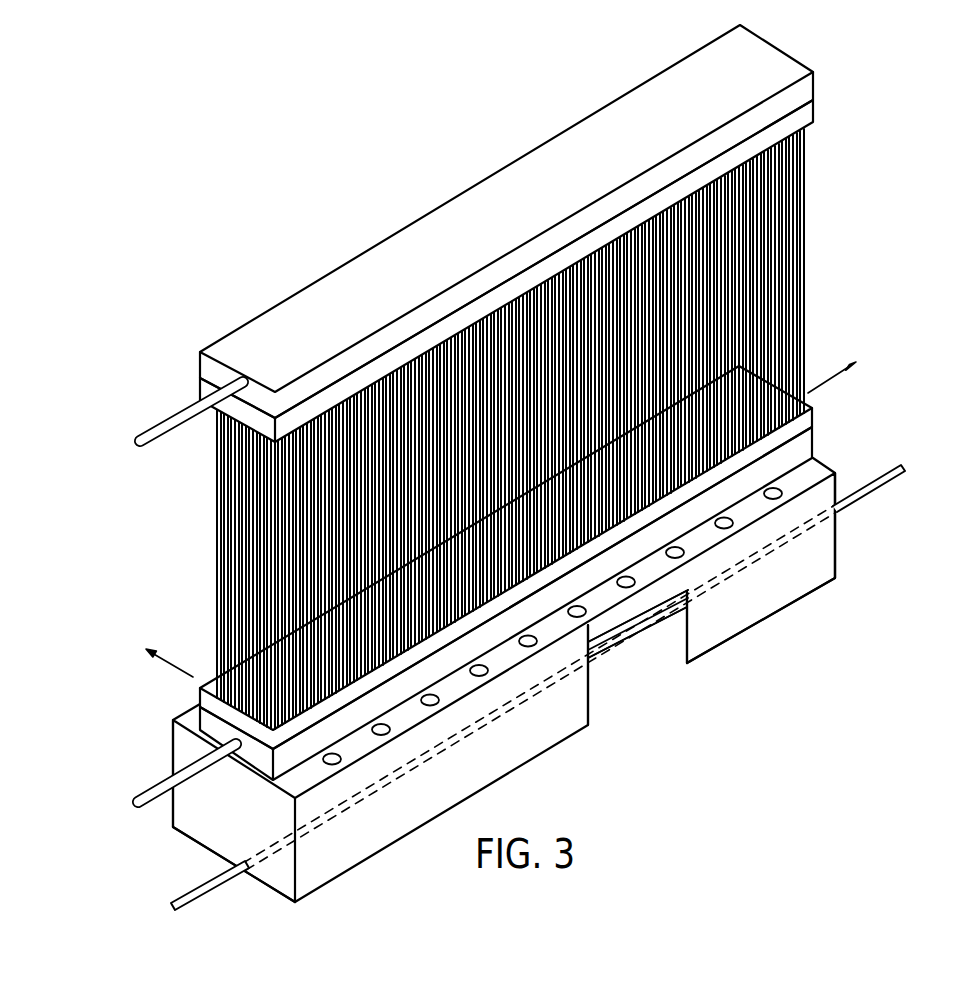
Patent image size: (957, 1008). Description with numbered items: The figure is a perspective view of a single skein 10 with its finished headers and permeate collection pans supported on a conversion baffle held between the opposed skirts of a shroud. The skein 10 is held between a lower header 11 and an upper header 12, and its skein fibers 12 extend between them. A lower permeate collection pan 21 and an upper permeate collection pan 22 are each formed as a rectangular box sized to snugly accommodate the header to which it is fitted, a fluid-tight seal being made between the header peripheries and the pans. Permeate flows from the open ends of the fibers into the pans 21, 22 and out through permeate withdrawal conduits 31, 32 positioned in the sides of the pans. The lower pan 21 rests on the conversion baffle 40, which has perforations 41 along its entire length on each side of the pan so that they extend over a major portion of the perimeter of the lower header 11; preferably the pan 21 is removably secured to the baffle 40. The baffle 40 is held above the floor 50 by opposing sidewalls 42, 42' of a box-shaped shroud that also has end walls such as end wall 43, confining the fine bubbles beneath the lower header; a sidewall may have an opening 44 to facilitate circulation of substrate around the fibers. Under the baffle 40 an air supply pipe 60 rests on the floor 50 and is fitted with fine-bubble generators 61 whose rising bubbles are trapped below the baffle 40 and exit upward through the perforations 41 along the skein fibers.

The skein 10 is at (481, 467).
The lower header 11 is at (814, 408).
The upper header 12 is at (818, 112).
The lower permeate collection pan 21 is at (814, 438).
The upper permeate collection pan 22 is at (818, 80).
The permeate withdrawal conduit 31 is at (147, 788).
The permeate withdrawal conduit 32 is at (142, 428).
The conversion baffle 40 is at (457, 680).
The perforations 41 is at (733, 523).
The sidewall 42 is at (868, 525).
The sidewall 42' is at (140, 791).
The end wall 43 is at (201, 840).
The opening 44 is at (687, 663).
The floor 50 is at (737, 692).
The air supply pipe 60 is at (900, 474).
The fine-bubble generators 61 is at (594, 660).